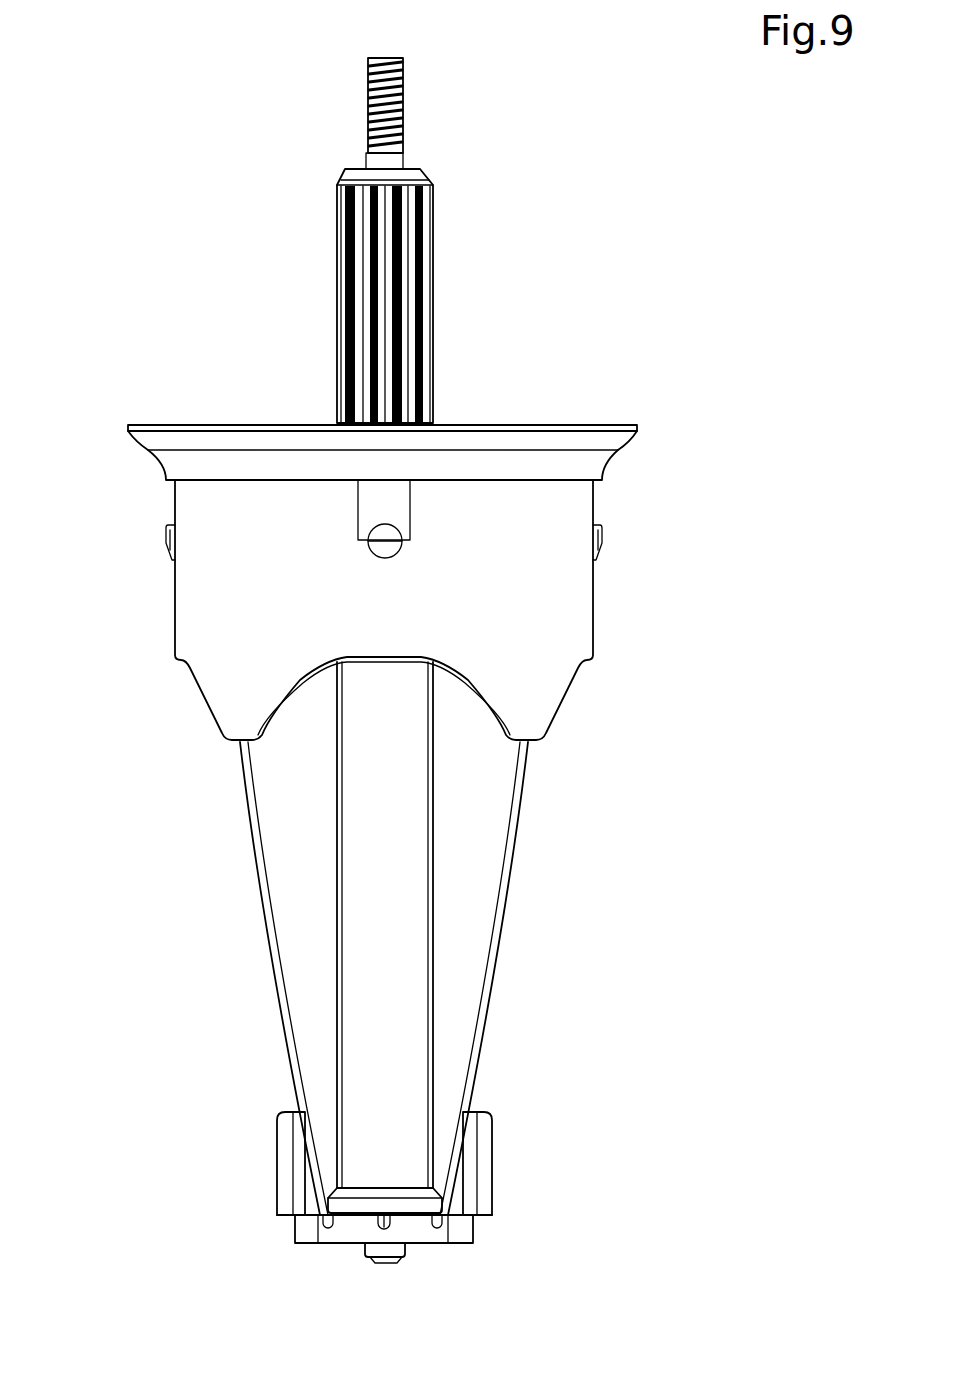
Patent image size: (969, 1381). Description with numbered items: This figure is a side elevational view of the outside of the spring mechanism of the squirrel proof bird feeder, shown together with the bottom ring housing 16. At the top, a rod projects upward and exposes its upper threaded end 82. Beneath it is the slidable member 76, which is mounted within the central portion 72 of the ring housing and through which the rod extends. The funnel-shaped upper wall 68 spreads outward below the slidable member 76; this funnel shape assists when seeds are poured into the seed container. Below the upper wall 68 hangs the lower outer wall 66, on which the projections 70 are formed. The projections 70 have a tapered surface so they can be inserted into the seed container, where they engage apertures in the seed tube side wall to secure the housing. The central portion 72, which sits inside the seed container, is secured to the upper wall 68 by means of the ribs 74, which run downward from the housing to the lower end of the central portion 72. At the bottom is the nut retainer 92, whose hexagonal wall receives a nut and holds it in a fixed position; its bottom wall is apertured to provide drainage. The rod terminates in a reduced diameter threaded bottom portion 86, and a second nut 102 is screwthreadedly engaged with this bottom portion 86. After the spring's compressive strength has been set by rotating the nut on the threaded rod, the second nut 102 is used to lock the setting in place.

The bottom ring housing 16 is at (657, 320).
The upper threaded end 82 is at (403, 106).
The slidable member 76 is at (432, 275).
The upper wall 68 is at (637, 425).
The lower outer wall 66 is at (496, 577).
The projections 70 is at (167, 528).
The central portion 72 is at (398, 865).
The ribs 74 is at (496, 793).
The nut retainer 92 is at (513, 1155).
The second nut 102 is at (407, 1245).
The reduced diameter threaded bottom portion 86 is at (383, 1265).